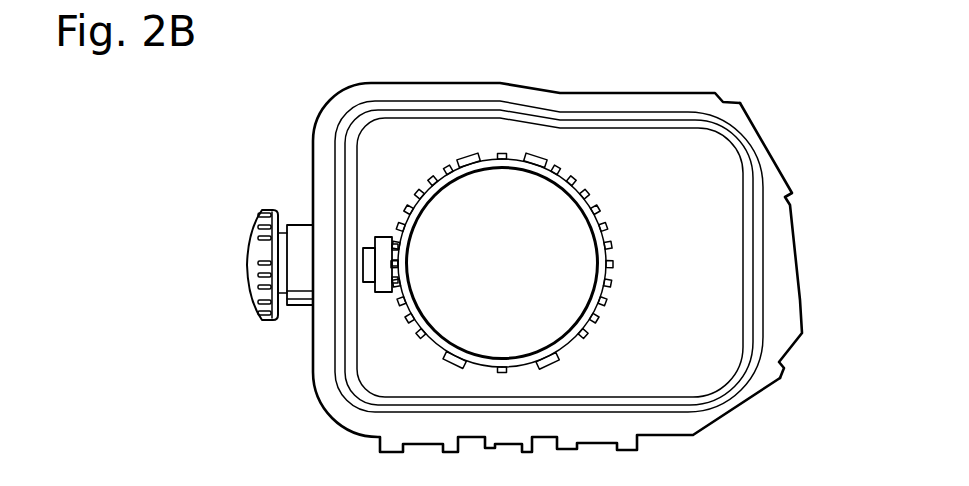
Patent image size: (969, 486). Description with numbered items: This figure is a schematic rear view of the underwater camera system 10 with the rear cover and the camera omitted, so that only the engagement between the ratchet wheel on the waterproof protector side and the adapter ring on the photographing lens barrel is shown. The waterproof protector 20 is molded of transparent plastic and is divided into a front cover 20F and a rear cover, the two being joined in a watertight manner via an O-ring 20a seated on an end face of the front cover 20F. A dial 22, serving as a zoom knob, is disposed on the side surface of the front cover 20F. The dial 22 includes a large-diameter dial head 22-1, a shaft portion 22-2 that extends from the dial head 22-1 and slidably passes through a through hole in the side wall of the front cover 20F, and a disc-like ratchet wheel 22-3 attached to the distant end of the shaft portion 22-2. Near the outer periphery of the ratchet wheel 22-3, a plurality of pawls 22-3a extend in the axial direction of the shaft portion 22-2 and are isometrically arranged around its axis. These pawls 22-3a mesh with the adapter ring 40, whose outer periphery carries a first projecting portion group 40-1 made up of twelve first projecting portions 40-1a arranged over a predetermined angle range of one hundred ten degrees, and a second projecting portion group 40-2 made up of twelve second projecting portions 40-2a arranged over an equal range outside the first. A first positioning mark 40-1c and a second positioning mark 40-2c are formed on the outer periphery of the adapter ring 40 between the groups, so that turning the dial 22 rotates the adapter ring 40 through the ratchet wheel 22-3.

The underwater camera system 10 is at (803, 130).
The waterproof protector 20 is at (290, 148).
The O-ring 20a is at (758, 227).
The front cover 20F is at (778, 257).
The dial 22 is at (218, 250).
The dial head 22-1 is at (253, 296).
The shaft portion 22-2 is at (360, 274).
The ratchet wheel 22-3 is at (380, 237).
The pawls 22-3a is at (414, 239).
The adapter ring 40 is at (624, 192).
The first projecting portion group 40-1 is at (395, 356).
The first projecting portions 40-1a is at (400, 317).
The first positioning mark 40-1c is at (497, 156).
The second projecting portion group 40-2 is at (637, 301).
The second projecting portions 40-2a is at (618, 263).
The second positioning mark 40-2c is at (503, 368).